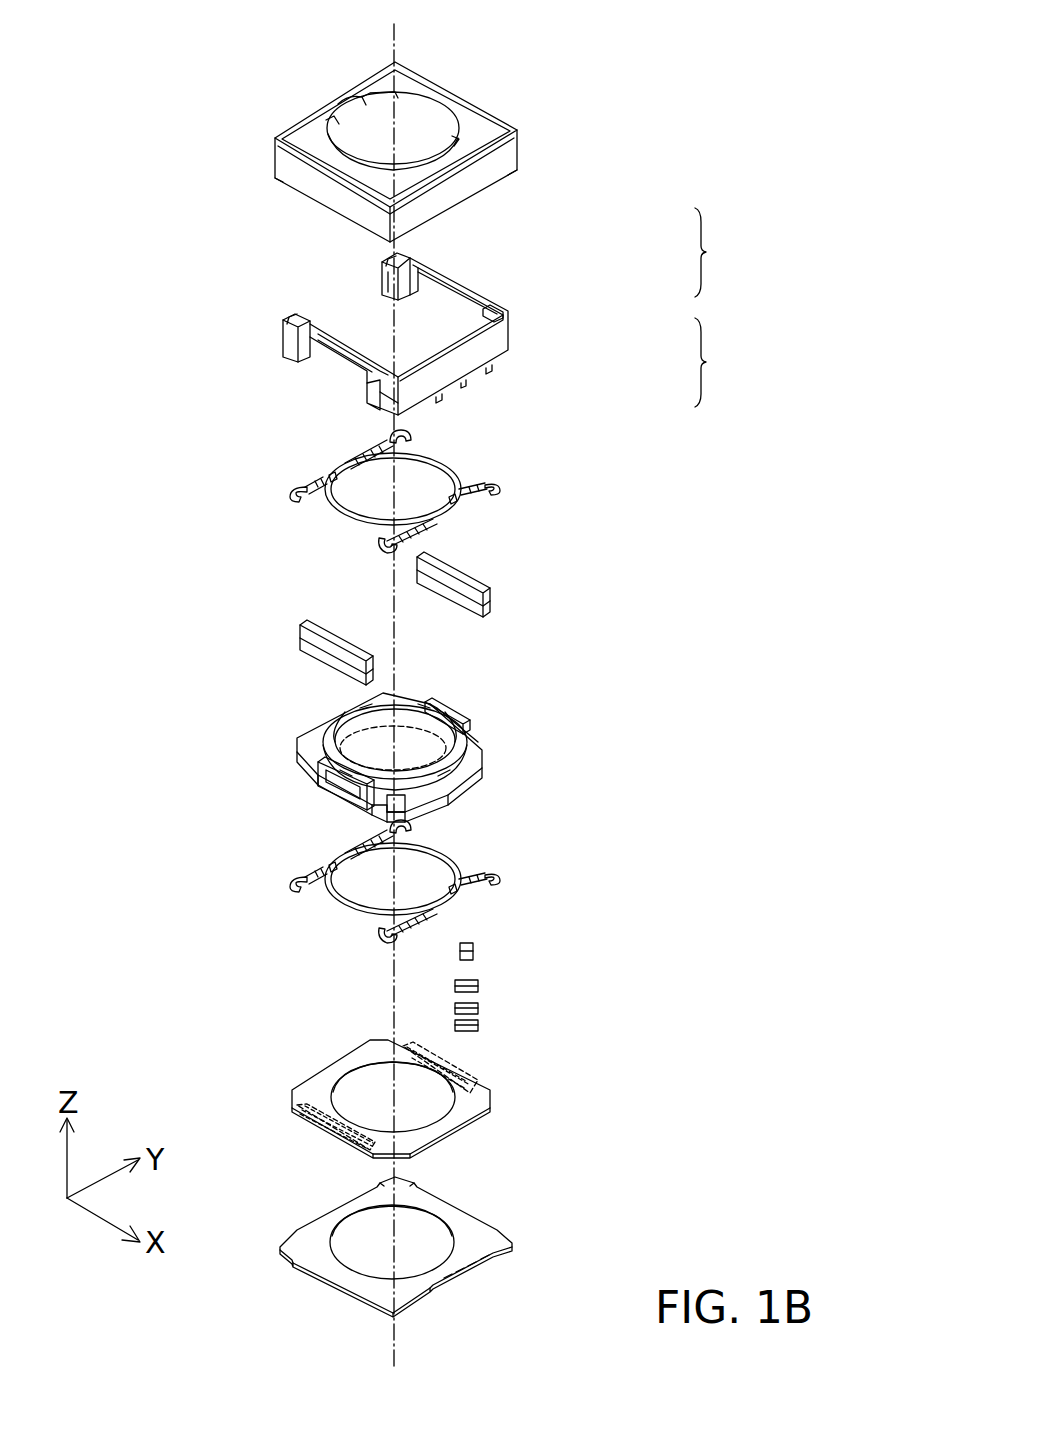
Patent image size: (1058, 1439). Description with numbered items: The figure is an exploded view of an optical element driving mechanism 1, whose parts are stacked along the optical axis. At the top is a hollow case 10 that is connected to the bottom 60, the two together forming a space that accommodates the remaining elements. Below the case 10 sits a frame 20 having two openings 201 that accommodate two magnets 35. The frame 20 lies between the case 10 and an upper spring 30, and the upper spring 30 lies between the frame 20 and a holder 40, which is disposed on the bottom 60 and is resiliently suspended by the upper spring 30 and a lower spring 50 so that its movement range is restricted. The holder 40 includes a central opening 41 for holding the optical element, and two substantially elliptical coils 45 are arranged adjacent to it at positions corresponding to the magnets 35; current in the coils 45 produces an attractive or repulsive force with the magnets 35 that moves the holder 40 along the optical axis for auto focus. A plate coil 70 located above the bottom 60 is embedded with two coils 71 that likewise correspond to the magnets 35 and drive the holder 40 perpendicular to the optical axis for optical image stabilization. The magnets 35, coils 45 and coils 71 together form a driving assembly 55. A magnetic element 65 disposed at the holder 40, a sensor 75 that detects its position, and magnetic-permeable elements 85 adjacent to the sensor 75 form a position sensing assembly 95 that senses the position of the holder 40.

The optical element driving mechanism 1 is at (118, 60).
The case 10 is at (484, 128).
The frame 20 is at (485, 346).
The openings 201 is at (455, 302).
The upper spring 30 is at (455, 478).
The magnets 35 is at (473, 566).
The holder 40 is at (423, 750).
The central opening 41 is at (463, 733).
The coils 45 is at (445, 707).
The lower spring 50 is at (455, 868).
The driving assembly 55 is at (703, 252).
The bottom 60 is at (470, 1228).
The magnetic element 65 is at (475, 948).
The plate coil 70 is at (405, 1102).
The coils 71 is at (462, 1075).
The sensor 75 is at (478, 983).
The magnetic-permeable elements 85 is at (480, 1025).
The position sensing assembly 95 is at (703, 362).